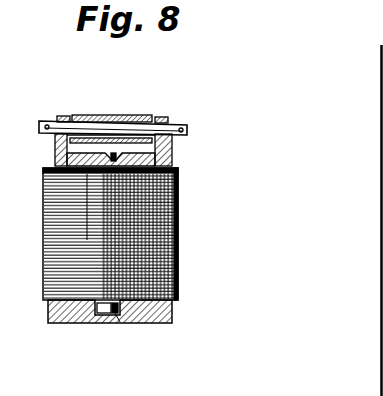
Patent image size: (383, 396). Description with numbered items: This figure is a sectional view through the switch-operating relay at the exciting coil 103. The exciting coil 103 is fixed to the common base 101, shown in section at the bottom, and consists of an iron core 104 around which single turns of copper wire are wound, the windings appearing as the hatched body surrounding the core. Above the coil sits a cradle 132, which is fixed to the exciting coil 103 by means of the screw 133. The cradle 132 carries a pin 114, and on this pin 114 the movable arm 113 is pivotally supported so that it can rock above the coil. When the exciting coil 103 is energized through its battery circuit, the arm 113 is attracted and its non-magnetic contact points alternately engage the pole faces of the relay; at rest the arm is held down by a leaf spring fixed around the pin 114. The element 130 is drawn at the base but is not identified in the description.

The common base 101 is at (165, 328).
The exciting coil 103 is at (178, 210).
The iron core 104 is at (180, 238).
The movable arm 113 is at (103, 116).
The pin 114 is at (173, 124).
The terminal plug 130 is at (115, 323).
The cradle 132 is at (172, 152).
The screw 133 is at (178, 183).